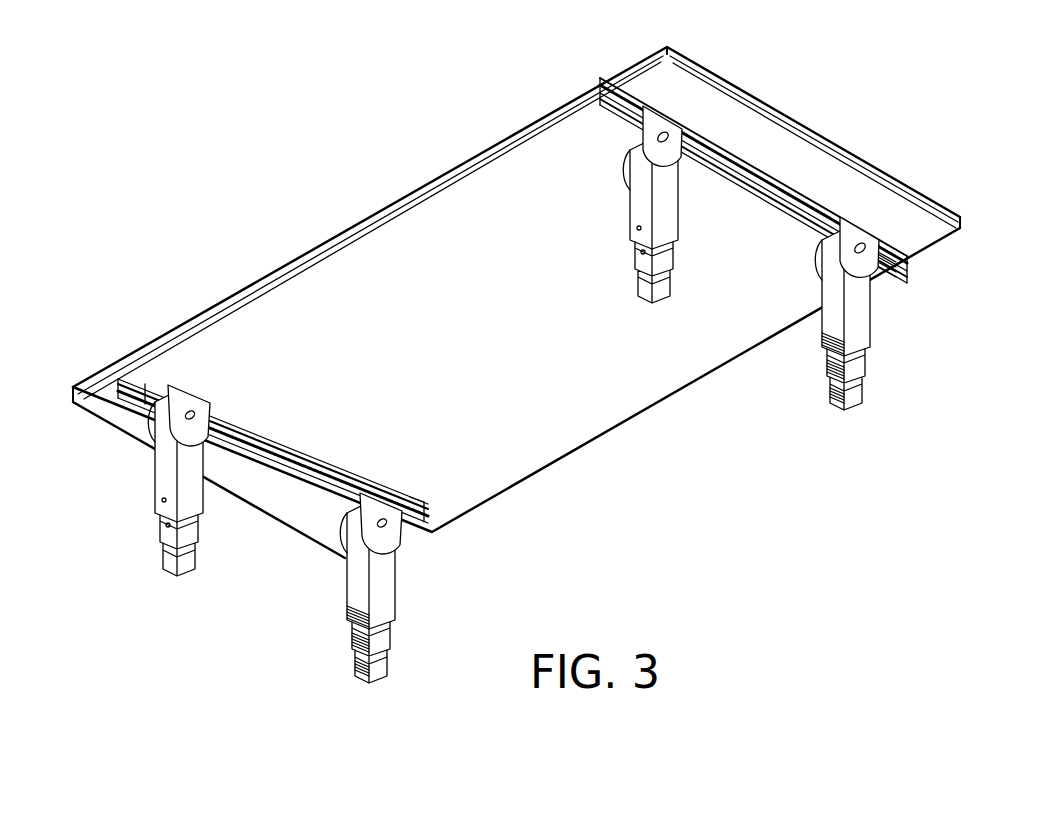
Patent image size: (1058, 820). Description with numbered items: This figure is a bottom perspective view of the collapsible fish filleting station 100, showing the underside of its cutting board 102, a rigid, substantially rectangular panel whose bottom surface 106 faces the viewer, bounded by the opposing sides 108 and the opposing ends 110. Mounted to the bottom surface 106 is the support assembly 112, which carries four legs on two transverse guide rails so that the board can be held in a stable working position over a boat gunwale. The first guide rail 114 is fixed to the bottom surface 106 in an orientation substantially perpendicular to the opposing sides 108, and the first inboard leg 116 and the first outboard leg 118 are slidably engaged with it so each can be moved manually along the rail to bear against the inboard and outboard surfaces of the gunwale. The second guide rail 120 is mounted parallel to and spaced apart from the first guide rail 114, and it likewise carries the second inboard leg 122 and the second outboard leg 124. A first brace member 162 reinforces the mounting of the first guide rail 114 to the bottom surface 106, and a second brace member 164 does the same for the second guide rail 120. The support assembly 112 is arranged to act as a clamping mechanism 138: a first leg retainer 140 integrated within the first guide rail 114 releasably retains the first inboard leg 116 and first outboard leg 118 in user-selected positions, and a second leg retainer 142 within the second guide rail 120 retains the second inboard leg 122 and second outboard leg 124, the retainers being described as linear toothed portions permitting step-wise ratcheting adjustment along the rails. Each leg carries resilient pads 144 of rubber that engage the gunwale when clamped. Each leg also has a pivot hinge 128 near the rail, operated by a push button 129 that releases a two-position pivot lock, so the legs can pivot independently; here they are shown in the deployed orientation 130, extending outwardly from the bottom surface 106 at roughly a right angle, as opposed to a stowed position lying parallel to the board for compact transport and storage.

The collapsible fish filleting station 100 is at (807, 72).
The cutting board 102 is at (225, 245).
The bottom surface 106 is at (507, 393).
The opposing sides 108 is at (218, 305).
The opposing ends 110 is at (130, 430).
The support assembly 112 is at (250, 607).
The first guide rail 114 is at (430, 534).
The first inboard leg 116 is at (155, 496).
The first outboard leg 118 is at (397, 598).
The second guide rail 120 is at (798, 218).
The second inboard leg 122 is at (627, 205).
The second outboard leg 124 is at (872, 326).
The pivot hinge 128 is at (191, 411).
The push button 129 is at (665, 130).
The deployed orientation 130 is at (256, 712).
The clamping mechanism 138 is at (791, 539).
The first leg retainer 140 is at (303, 464).
The second leg retainer 142 is at (755, 167).
The resilient pads 144 is at (355, 663).
The first brace member 162 is at (242, 418).
The second brace member 164 is at (802, 196).